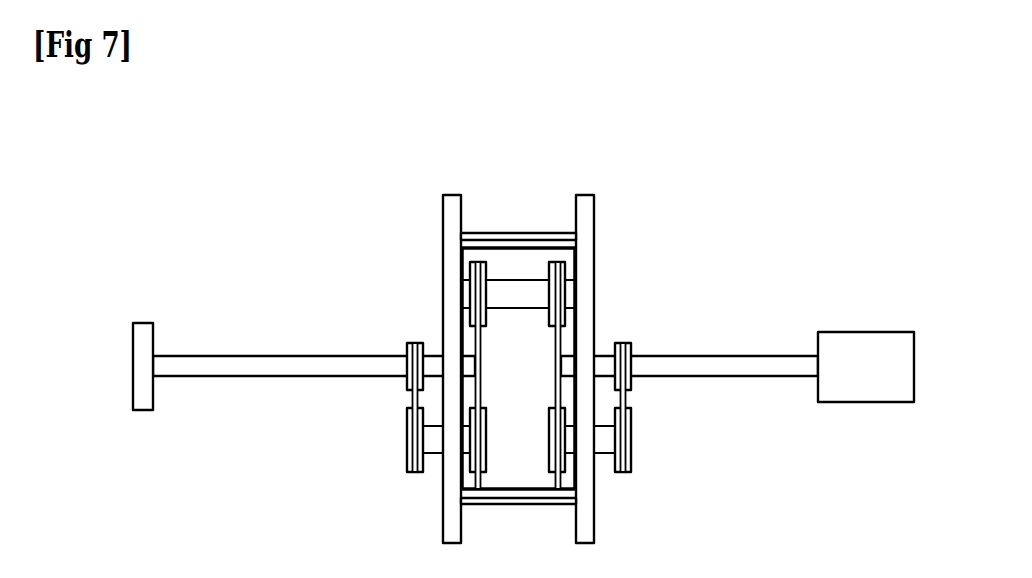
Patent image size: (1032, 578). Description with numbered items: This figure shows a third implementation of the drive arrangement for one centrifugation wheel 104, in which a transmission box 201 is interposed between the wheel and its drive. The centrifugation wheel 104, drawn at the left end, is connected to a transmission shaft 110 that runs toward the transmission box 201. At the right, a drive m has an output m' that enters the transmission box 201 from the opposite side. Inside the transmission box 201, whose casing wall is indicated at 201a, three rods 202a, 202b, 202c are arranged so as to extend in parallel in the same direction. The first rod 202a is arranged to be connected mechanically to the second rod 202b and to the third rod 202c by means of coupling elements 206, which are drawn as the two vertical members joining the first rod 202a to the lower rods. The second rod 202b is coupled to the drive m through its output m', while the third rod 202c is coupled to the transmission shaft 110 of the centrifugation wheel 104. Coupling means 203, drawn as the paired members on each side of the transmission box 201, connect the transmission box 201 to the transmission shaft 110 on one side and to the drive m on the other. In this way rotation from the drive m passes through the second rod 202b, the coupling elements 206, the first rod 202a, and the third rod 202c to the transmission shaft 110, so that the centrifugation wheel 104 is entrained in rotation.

The centrifugation wheel 104 is at (145, 326).
The transmission shaft 110 is at (242, 354).
The transmission box 201 is at (576, 313).
The housing wall 201a is at (590, 272).
The first rod 202a is at (513, 293).
The second rod 202b is at (604, 443).
The third rod 202c is at (432, 445).
The coupling means 203 is at (386, 401).
The coupling element 206 is at (540, 362).
The drive m is at (866, 367).
The output m' is at (689, 322).